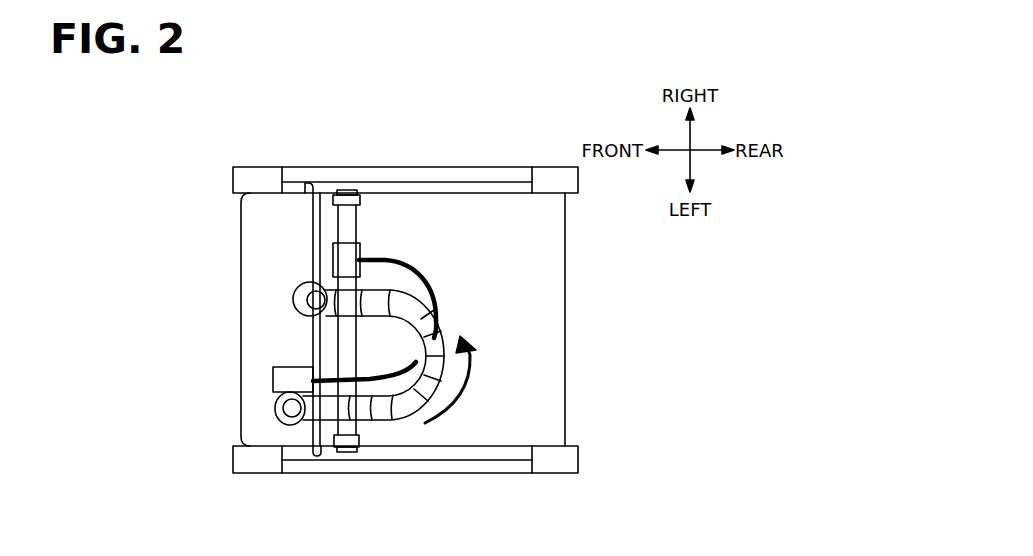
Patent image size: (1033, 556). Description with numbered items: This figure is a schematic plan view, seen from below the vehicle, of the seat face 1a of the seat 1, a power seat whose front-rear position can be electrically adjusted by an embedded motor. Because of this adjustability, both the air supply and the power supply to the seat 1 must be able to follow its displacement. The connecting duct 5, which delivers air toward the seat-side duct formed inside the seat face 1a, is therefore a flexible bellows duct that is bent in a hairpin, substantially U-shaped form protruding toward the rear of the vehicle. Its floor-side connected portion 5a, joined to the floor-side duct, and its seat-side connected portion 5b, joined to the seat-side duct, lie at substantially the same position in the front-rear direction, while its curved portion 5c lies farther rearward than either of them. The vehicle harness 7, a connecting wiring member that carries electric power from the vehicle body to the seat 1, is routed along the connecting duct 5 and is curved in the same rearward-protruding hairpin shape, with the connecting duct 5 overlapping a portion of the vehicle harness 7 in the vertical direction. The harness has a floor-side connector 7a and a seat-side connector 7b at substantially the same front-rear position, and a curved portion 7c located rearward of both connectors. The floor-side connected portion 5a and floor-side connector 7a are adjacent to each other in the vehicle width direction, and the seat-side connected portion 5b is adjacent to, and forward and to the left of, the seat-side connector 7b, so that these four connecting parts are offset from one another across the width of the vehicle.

The seat 1 is at (565, 308).
The seat face 1a is at (550, 371).
The connecting duct 5 is at (375, 419).
The floor-side connected portion 5a is at (278, 422).
The seat-side connected portion 5b is at (300, 283).
The curved portion 5c is at (447, 422).
The vehicle harness 7 is at (413, 268).
The floor-side connector 7a is at (273, 379).
The seat-side connector 7b is at (348, 243).
The curved portion 7c is at (437, 311).